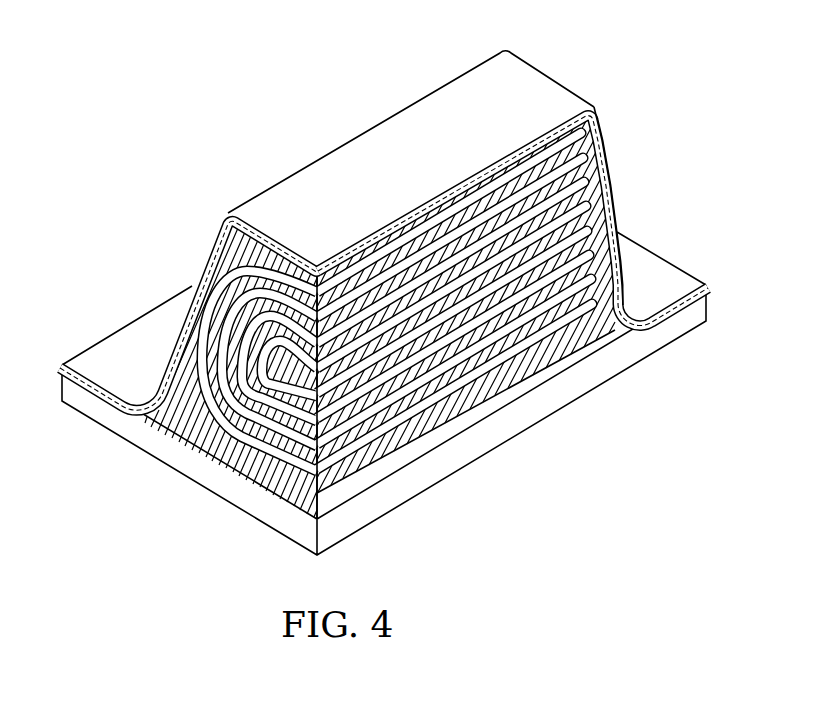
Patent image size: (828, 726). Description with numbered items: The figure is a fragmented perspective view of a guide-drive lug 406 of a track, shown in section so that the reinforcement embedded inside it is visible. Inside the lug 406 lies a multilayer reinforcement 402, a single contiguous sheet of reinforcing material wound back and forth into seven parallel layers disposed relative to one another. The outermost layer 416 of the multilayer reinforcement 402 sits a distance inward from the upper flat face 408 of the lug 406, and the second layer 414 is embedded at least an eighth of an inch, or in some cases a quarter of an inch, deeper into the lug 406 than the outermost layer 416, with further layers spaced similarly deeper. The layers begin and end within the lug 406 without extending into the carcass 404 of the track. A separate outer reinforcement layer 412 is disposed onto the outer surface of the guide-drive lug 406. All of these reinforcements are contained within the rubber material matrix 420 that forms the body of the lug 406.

The multilayer reinforcement 402 is at (219, 273).
The carcass 404 is at (187, 455).
The guide-drive lug 406 is at (384, 303).
The upper flat face 408 is at (388, 131).
The outer reinforcement layer 412 is at (178, 328).
The second layer 414 is at (590, 150).
The outermost layer 416 is at (541, 156).
The material matrix 420 is at (617, 197).